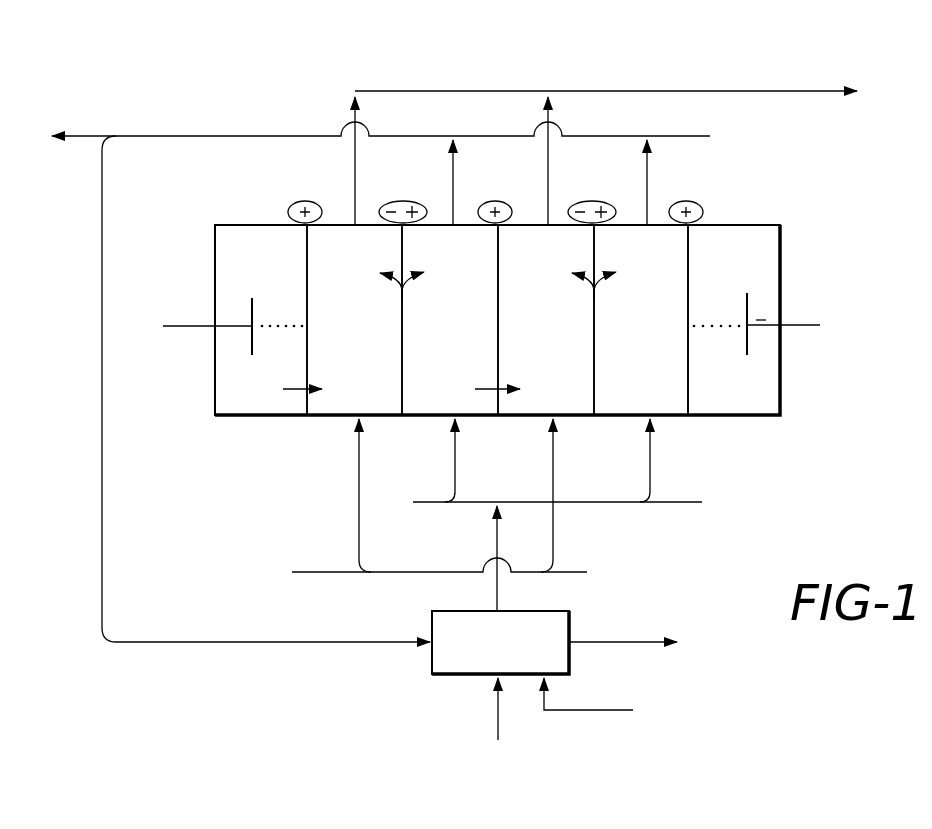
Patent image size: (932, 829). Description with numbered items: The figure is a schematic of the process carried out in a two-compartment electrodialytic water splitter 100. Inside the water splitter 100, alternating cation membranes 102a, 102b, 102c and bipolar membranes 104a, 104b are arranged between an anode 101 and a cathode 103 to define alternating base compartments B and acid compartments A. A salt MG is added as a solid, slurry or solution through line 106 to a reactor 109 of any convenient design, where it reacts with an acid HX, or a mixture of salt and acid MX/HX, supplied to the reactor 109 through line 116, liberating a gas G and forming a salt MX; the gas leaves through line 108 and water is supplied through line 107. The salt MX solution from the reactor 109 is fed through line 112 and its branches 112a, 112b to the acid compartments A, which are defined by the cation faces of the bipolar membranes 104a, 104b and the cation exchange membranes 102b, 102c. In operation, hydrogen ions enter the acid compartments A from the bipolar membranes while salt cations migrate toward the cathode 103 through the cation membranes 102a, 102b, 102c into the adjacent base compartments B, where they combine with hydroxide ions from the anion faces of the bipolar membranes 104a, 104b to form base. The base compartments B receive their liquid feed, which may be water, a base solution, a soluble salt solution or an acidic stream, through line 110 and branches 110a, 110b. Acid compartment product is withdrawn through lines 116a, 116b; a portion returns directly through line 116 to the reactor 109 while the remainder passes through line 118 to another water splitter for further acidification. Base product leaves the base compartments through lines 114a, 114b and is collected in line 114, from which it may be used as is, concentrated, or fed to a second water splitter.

The water splitter 100 is at (807, 243).
The anode 101 is at (252, 345).
The cation membrane 102a is at (312, 401).
The cation membrane 102b is at (503, 401).
The cation membrane 102c is at (690, 399).
The cathode 103 is at (749, 348).
The bipolar membrane 104a is at (405, 399).
The bipolar membrane 104b is at (597, 399).
The line 106 is at (496, 709).
The water feed line to reactor 107 is at (636, 712).
The gas product line 108 is at (632, 624).
The reactor 109 is at (462, 650).
The line 110 is at (338, 574).
The line 110a is at (361, 531).
The line 110b is at (556, 536).
The line 112 is at (514, 546).
The line 112a is at (457, 468).
The line 112b is at (652, 466).
The line 114 is at (527, 58).
The line 114a is at (353, 110).
The line 114b is at (552, 118).
The line 116 is at (197, 135).
The line 116a is at (456, 170).
The line 116b is at (650, 170).
The line 118 is at (86, 137).